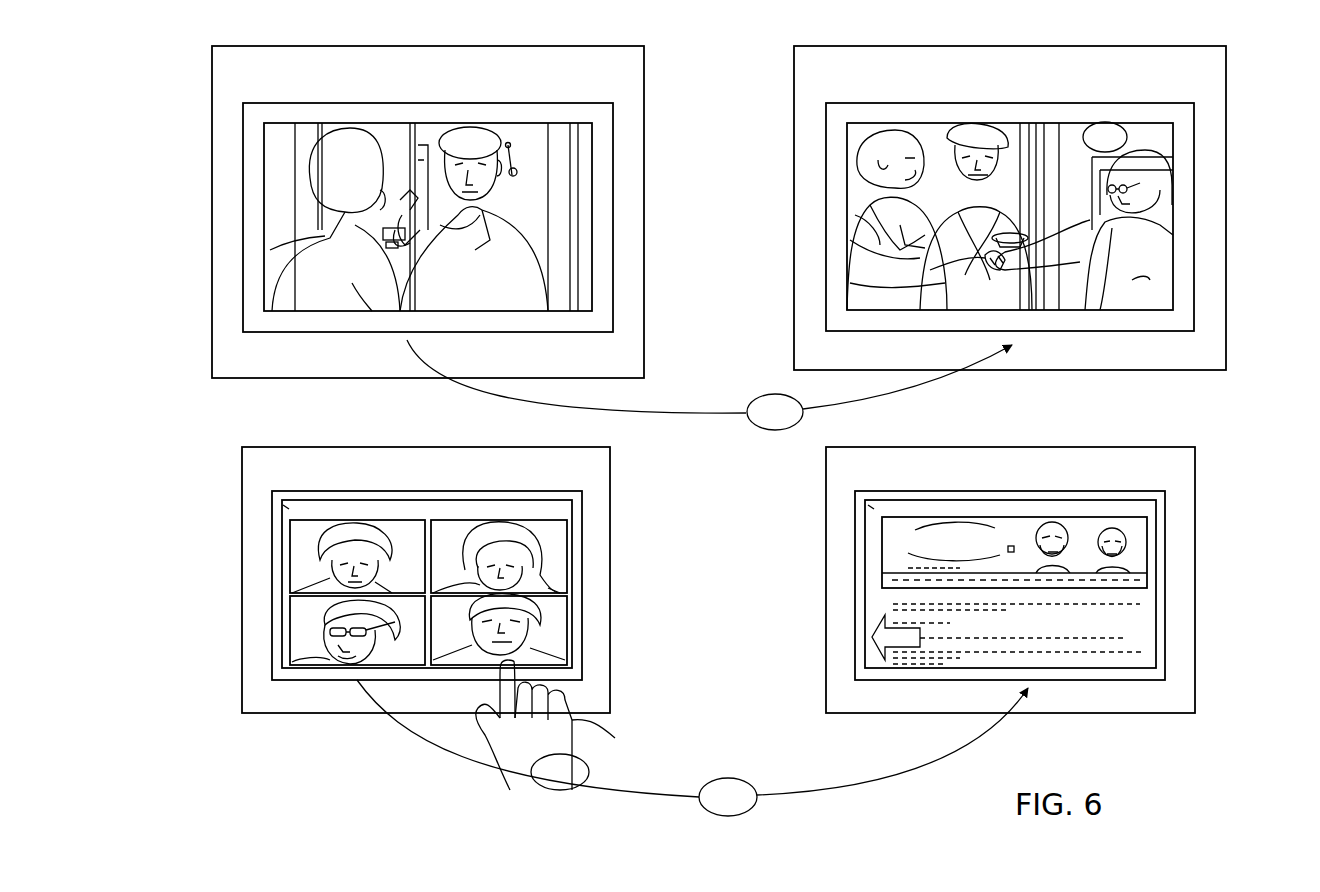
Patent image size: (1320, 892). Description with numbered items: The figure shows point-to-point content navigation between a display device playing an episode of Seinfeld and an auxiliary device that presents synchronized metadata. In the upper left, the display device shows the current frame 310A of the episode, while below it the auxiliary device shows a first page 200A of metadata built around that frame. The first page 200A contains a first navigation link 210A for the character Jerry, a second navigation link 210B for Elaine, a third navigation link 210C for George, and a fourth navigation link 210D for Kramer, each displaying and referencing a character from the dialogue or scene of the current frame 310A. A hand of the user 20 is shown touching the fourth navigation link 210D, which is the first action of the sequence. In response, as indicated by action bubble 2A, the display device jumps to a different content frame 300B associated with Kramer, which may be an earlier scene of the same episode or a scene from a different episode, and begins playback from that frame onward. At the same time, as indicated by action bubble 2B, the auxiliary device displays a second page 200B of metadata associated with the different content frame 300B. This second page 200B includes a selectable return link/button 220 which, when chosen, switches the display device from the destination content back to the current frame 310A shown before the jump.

The current frame 310A is at (290, 186).
The different content frame 300B is at (855, 214).
The first page of metadata 200A is at (562, 510).
The second page of metadata 200B is at (1148, 508).
The first navigation link 210A is at (298, 558).
The second navigation link 210B is at (547, 552).
The third navigation link 210C is at (298, 632).
The fourth navigation link 210D is at (548, 614).
The user 20 is at (573, 717).
The return link/button 220 is at (902, 650).
The action bubble 2A is at (709, 385).
The action bubble 2B is at (692, 748).